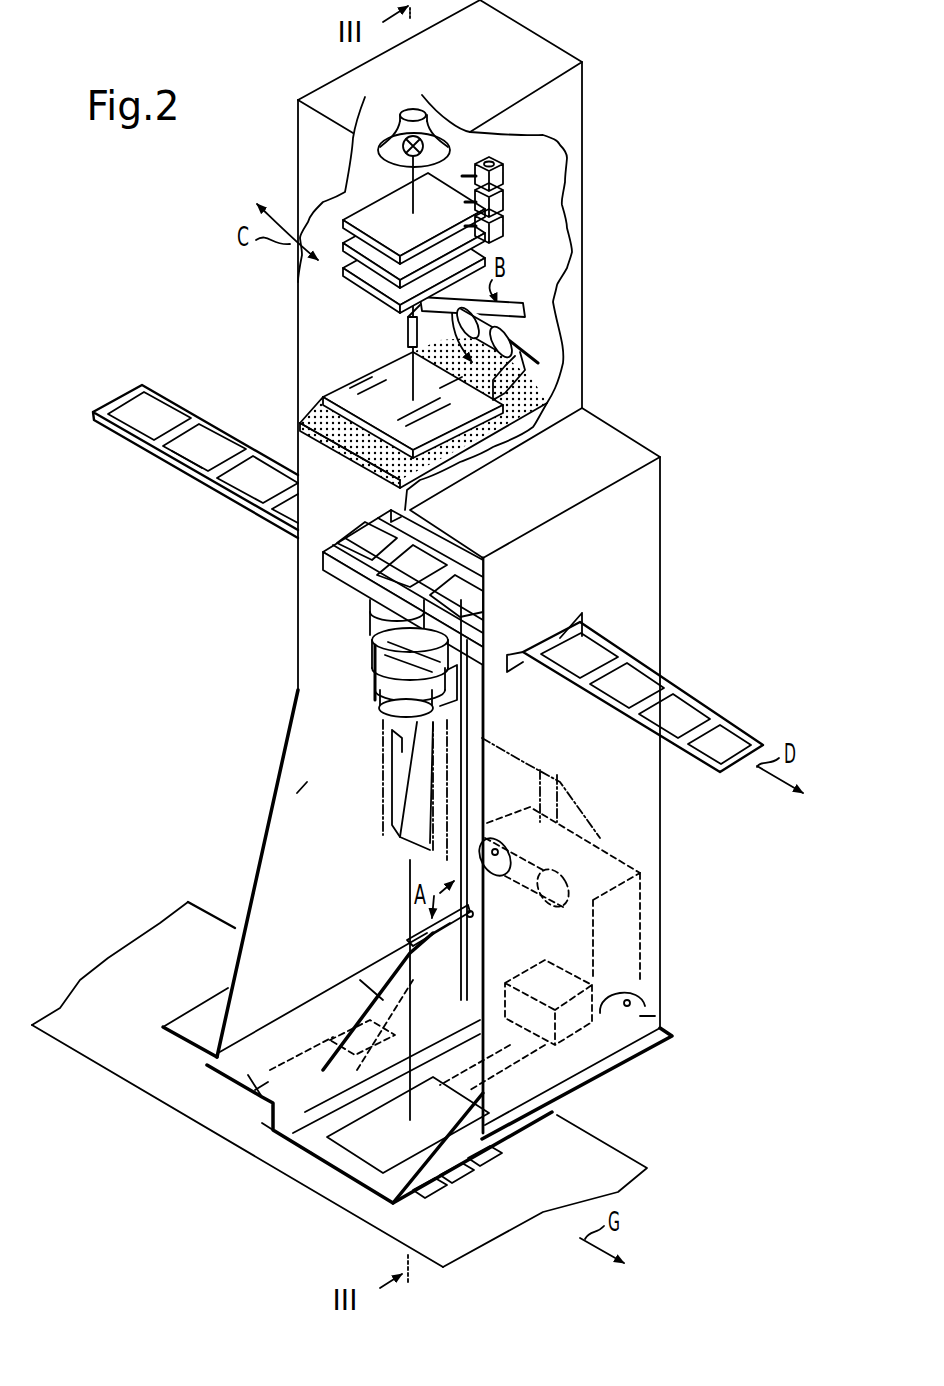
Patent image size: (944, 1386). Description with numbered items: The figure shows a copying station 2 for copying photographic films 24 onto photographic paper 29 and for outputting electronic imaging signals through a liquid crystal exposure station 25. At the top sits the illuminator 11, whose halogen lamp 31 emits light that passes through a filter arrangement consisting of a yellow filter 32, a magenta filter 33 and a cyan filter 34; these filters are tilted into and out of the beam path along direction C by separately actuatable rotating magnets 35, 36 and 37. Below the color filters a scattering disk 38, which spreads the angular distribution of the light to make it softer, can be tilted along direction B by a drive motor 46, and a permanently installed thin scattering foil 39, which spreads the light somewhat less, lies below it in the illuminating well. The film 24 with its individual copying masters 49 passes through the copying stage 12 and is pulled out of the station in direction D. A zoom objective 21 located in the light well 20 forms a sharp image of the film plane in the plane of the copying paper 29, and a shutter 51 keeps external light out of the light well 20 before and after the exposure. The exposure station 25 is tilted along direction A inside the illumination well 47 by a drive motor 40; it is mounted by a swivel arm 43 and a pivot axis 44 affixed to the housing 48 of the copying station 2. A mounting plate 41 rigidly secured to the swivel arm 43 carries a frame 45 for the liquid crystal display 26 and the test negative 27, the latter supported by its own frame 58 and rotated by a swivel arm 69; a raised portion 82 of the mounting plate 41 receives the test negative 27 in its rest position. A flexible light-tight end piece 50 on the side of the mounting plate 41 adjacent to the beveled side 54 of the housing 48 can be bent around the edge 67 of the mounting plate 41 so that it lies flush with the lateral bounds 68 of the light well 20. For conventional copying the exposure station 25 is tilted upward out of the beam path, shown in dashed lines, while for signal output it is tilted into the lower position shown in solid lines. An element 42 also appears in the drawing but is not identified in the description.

The copying station 2 is at (279, 298).
The illuminator 11 is at (576, 90).
The copying stage 12 is at (322, 560).
The light well 20 is at (269, 826).
The zoom objective 21 is at (375, 675).
The photographic film 24 is at (151, 451).
The liquid crystal exposure station 25 is at (314, 918).
The liquid crystal display 26 is at (505, 776).
The test negative 27 is at (321, 1057).
The photographic paper 29 is at (590, 1141).
The halogen lamp 31 is at (430, 112).
The yellow filter 32 is at (356, 216).
The magenta filter 33 is at (346, 252).
The cyan filter 34 is at (373, 285).
The rotating magnet 35 is at (505, 170).
The rotating magnet 36 is at (505, 200).
The rotating magnet 37 is at (505, 226).
The scattering disk 38 is at (373, 372).
The scattering foil 39 is at (303, 425).
The drive motor 40 is at (594, 863).
The mounting plate 41 is at (262, 1106).
The tab 42 is at (462, 1181).
The swivel arm 43 is at (505, 1133).
The pivot axis 44 is at (646, 1004).
The frame 45 is at (300, 1149).
The drive motor 46 is at (505, 339).
The illumination well 47 is at (318, 330).
The housing 48 is at (661, 525).
The copying master 49 is at (230, 482).
The flexible light-tight end piece 50 is at (381, 729).
The shutter 51 is at (378, 605).
The beveled side 54 is at (268, 917).
The frame 58 is at (386, 806).
The edge 67 is at (260, 1101).
The lateral bounds 68 is at (307, 782).
The swivel arm 69 is at (412, 940).
The raised portion 82 is at (258, 1128).